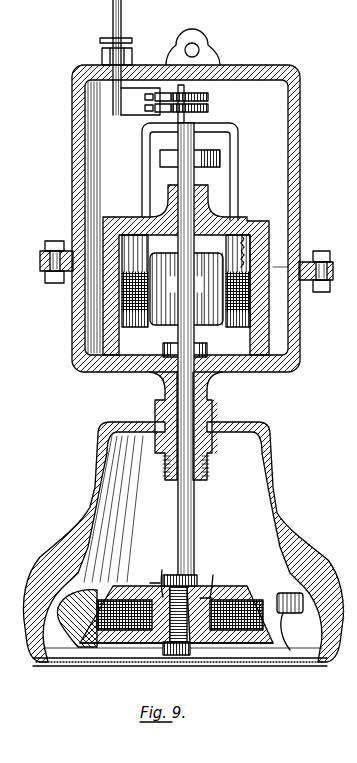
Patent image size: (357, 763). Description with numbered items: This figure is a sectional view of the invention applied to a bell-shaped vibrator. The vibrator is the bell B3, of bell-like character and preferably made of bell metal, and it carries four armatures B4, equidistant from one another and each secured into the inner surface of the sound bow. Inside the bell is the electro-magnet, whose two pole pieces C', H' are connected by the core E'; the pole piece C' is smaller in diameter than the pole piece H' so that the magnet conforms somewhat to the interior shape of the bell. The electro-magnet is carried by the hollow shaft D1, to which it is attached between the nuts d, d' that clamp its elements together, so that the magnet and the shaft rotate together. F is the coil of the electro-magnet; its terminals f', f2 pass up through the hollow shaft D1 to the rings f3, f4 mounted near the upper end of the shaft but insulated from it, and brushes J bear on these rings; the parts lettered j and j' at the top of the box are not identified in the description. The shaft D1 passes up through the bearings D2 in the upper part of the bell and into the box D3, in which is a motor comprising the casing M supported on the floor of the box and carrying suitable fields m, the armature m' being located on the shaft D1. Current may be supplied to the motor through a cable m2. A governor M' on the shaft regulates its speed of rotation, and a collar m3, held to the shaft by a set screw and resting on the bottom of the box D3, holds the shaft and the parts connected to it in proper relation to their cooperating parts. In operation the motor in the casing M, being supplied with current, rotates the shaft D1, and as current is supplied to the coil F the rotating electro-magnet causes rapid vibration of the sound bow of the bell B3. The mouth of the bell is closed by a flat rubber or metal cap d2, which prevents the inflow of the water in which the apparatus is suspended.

The conduit tube j is at (119, 57).
The wire j' is at (125, 83).
The brush J is at (165, 93).
The ring f3 is at (208, 97).
The ring f4 is at (208, 108).
The governor M' is at (203, 171).
The cable m2 is at (243, 233).
The casing M is at (221, 269).
The box D3 is at (306, 323).
The fields m is at (186, 285).
The armature m' is at (186, 289).
The collar m3 is at (163, 352).
The hollow shaft D1 is at (194, 506).
The bearings D2 is at (213, 410).
The bell-shaped vibrator B3 is at (272, 468).
The coil terminal f' is at (152, 560).
The coil terminal f2 is at (212, 587).
The core E' is at (142, 572).
The nut d' is at (187, 570).
The pole piece C' is at (213, 583).
The armature B4 is at (58, 655).
The coil F is at (108, 645).
The nut d is at (166, 644).
The pole piece H' is at (180, 675).
The cap d2 is at (268, 666).